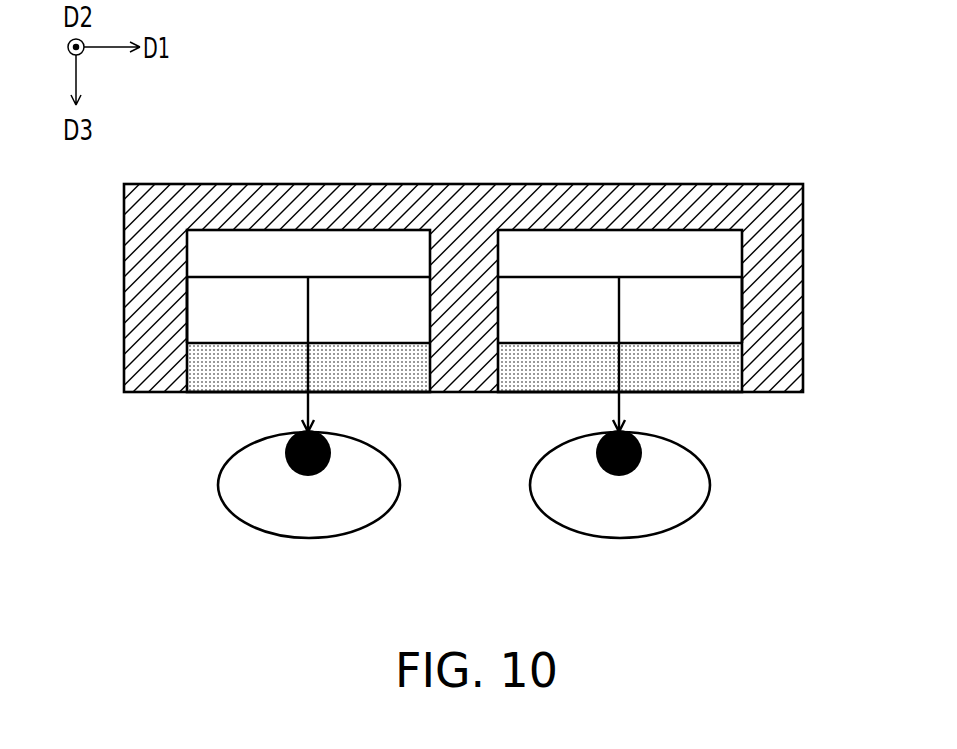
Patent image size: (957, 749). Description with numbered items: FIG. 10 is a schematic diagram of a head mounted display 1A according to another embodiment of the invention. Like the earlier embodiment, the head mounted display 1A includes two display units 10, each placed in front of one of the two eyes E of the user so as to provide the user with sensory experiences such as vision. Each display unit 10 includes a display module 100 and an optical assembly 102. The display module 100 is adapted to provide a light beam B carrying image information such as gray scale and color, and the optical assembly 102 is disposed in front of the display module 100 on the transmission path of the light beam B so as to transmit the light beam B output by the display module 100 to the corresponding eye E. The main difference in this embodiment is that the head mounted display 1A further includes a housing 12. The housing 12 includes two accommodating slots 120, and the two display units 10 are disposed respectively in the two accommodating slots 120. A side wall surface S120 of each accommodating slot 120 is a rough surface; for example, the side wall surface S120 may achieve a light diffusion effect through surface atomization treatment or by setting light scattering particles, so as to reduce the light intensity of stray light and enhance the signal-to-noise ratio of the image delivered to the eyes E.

The head mounted display 1A is at (758, 153).
The display unit 10 is at (47, 250).
The display module 100 is at (197, 255).
The optical assembly 102 is at (197, 367).
The housing 12 is at (452, 203).
The accommodating slot 120 is at (529, 330).
The side wall surface S120 is at (194, 300).
The light beam B is at (311, 314).
The eye E is at (372, 522).